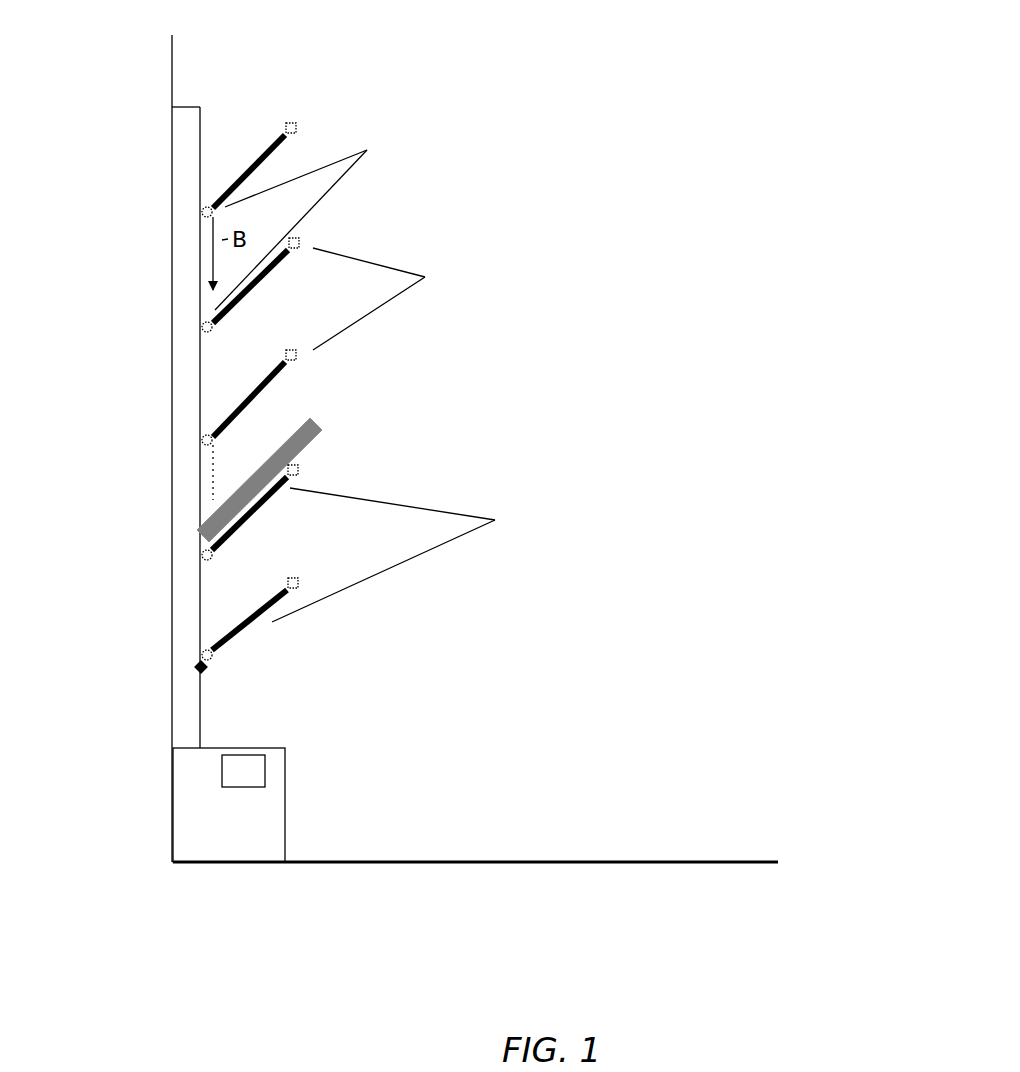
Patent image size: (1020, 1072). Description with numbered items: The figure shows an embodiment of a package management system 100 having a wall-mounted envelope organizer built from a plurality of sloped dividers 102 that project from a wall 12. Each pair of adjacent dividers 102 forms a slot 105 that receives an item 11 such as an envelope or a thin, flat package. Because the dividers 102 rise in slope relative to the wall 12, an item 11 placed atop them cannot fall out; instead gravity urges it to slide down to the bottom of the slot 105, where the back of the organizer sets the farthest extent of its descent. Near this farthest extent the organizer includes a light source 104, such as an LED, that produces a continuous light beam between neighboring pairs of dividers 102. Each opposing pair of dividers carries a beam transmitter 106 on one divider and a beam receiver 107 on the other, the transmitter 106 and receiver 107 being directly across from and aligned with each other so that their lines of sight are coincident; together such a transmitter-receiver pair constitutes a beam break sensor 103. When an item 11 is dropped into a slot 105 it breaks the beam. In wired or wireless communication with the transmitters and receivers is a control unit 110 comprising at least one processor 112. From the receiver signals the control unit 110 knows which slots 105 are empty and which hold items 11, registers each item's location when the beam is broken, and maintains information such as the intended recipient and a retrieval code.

The package management system 100 is at (525, 58).
The wall 12 is at (173, 345).
The beam transmitter 106 is at (207, 205).
The beam break sensor 103 is at (311, 195).
The beam receiver 107 is at (214, 330).
The light source 104 is at (399, 287).
The slot 105 is at (286, 390).
The item 11 is at (306, 424).
The sloped divider 102 is at (390, 569).
The control unit 110 is at (282, 824).
The processor 112 is at (243, 762).